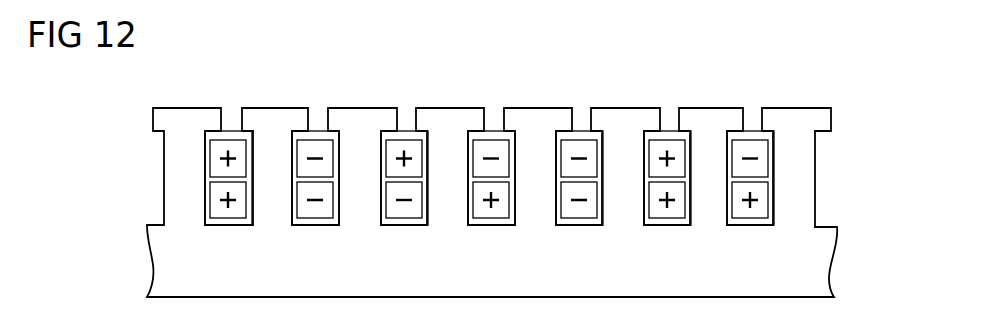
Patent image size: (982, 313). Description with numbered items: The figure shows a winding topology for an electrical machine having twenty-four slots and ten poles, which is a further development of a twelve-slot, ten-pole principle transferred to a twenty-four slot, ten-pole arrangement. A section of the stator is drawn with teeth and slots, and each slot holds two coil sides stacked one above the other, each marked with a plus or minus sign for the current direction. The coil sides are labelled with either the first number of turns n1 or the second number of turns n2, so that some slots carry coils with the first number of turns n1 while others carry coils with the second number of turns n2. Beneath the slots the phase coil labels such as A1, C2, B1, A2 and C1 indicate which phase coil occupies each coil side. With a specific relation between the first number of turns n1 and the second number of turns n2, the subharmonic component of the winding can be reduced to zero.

The first number of turns n1 is at (435, 178).
The second number of turns n2 is at (564, 178).
The phase A first coil A1 is at (312, 213).
The phase C second coil C2 is at (403, 213).
The phase B first coil B1 is at (578, 213).
The phase A second coil A2 is at (579, 213).
The phase C first coil C1 is at (750, 199).